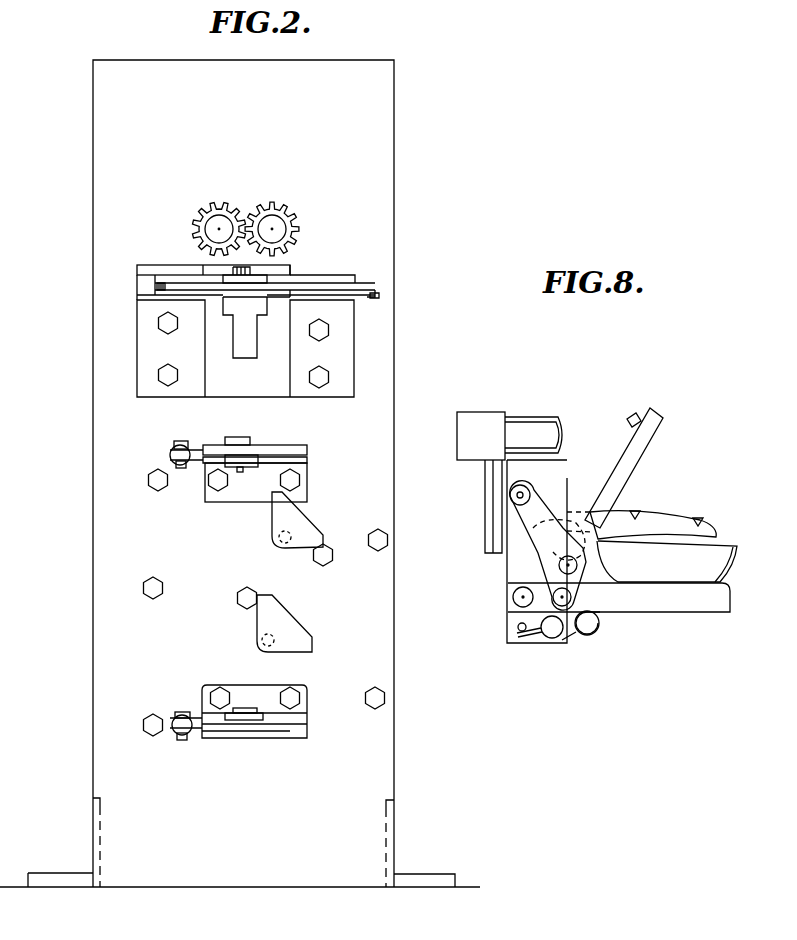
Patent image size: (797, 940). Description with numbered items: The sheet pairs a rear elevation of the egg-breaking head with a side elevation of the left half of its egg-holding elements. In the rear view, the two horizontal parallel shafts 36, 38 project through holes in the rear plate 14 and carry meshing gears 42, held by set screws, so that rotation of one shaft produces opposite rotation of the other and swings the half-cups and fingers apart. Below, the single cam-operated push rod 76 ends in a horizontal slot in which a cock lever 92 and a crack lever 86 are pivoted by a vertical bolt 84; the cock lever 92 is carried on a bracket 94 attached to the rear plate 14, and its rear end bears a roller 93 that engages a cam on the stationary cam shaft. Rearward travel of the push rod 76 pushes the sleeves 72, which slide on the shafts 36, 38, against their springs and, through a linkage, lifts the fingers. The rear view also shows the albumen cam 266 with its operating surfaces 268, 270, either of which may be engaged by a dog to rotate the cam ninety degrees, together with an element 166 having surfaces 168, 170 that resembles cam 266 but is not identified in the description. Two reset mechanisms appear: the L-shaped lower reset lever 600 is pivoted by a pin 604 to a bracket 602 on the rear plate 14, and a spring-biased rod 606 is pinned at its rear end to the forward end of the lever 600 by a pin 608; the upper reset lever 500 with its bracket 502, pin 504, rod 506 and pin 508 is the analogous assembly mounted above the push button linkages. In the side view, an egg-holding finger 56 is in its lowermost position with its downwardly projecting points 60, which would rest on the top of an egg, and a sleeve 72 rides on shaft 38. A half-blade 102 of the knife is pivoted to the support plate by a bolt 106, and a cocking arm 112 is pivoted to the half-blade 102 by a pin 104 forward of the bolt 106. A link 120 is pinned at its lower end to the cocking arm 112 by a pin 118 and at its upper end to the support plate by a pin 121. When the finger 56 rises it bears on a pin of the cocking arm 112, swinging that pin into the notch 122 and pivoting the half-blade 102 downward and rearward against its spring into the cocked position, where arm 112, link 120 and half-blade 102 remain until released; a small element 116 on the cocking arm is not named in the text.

In FIG. 2, the rear plate 14 is at (272, 148).
In FIG. 2, the right horizontal shaft 36 is at (292, 226).
In FIG. 2, the left horizontal shaft 38 is at (198, 212).
In FIG. 8, the left horizontal shaft 38 is at (550, 417).
In FIG. 2, the gears 42 is at (279, 203).
In FIG. 8, the egg-holding finger 56 is at (660, 515).
In FIG. 8, the points 60 is at (622, 512).
In FIG. 8, the sleeves 72 is at (490, 412).
In FIG. 2, the push rod 76 is at (268, 270).
In FIG. 2, the vertical bolt 84 is at (253, 279).
In FIG. 2, the crack lever 86 is at (190, 280).
In FIG. 2, the cock lever 92 is at (363, 288).
In FIG. 2, the roller 93 is at (372, 296).
In FIG. 2, the bracket 94 is at (355, 345).
In FIG. 8, the half-blade 102 is at (712, 612).
In FIG. 8, the pin 104 is at (578, 600).
In FIG. 8, the bolt 106 is at (512, 597).
In FIG. 8, the cocking arm 112 is at (660, 412).
In FIG. 8, the stud 116 is at (634, 415).
In FIG. 8, the pin 118 is at (557, 561).
In FIG. 8, the link 120 is at (522, 524).
In FIG. 8, the pin 121 is at (555, 496).
In FIG. 8, the notch 122 is at (575, 472).
In FIG. 2, the bracket assembly 166 is at (298, 534).
In FIG. 2, the bracket plate 168 is at (270, 525).
In FIG. 2, the pivot hole 170 is at (290, 548).
In FIG. 2, the albumen cam 266 is at (325, 636).
In FIG. 2, the operating surface 268 is at (258, 638).
In FIG. 2, the operating surface 270 is at (272, 655).
In FIG. 2, the upper reset lever 500 is at (310, 458).
In FIG. 2, the bracket 502 is at (308, 481).
In FIG. 2, the pin 504 is at (250, 440).
In FIG. 2, the rod 506 is at (170, 458).
In FIG. 2, the pin 508 is at (180, 441).
In FIG. 2, the lower reset lever 600 is at (308, 727).
In FIG. 2, the bracket 602 is at (308, 715).
In FIG. 2, the pin 604 is at (243, 708).
In FIG. 2, the rod 606 is at (170, 730).
In FIG. 2, the pin 608 is at (170, 715).